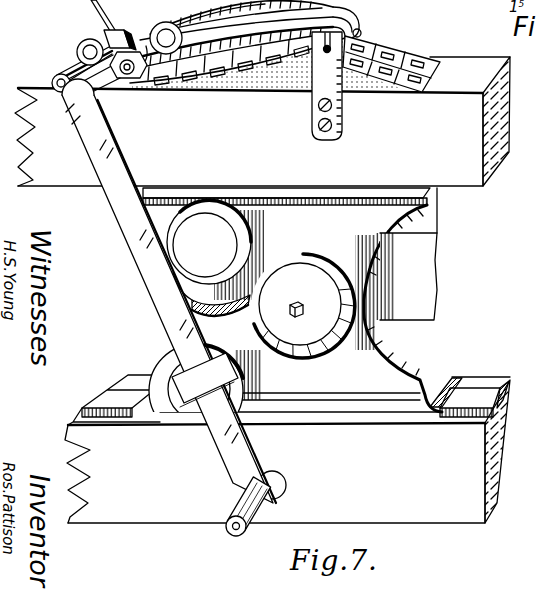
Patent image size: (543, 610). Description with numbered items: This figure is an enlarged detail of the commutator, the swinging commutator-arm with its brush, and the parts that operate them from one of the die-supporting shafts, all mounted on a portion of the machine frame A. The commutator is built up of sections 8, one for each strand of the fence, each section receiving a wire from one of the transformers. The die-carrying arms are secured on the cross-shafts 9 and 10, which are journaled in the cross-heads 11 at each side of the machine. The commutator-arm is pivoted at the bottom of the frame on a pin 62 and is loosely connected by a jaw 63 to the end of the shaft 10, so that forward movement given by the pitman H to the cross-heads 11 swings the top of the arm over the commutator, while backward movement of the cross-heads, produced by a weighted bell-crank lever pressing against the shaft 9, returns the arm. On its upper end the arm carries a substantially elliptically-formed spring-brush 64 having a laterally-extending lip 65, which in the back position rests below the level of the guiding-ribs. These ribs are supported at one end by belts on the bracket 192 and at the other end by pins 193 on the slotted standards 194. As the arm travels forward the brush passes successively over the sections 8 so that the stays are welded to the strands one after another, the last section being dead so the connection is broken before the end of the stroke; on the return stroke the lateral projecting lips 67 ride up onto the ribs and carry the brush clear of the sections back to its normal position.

The section of the commutator 8 is at (220, 69).
The cross-shaft 9 is at (228, 247).
The cross-shaft 10 is at (222, 348).
The cross-heads 11 is at (262, 383).
The pin 62 is at (278, 488).
The jaw 63 is at (182, 393).
The spring-brush 64 is at (110, 143).
The laterally-extending lip 65 is at (96, 79).
The lateral projecting lips 67 is at (88, 108).
The bracket 192 is at (60, 73).
The pins 193 is at (322, 56).
The slotted standards 194 is at (58, 58).
The pitman H is at (406, 276).
The lower bed block A is at (287, 449).